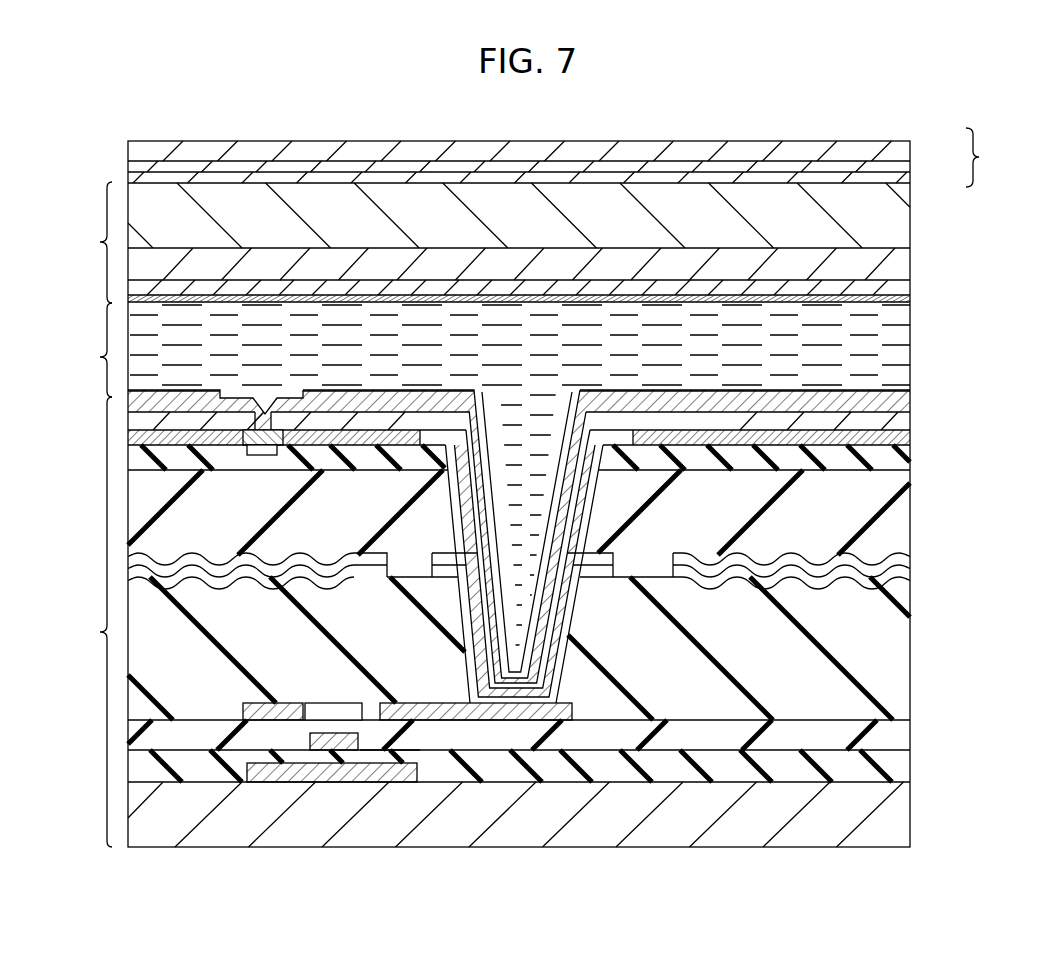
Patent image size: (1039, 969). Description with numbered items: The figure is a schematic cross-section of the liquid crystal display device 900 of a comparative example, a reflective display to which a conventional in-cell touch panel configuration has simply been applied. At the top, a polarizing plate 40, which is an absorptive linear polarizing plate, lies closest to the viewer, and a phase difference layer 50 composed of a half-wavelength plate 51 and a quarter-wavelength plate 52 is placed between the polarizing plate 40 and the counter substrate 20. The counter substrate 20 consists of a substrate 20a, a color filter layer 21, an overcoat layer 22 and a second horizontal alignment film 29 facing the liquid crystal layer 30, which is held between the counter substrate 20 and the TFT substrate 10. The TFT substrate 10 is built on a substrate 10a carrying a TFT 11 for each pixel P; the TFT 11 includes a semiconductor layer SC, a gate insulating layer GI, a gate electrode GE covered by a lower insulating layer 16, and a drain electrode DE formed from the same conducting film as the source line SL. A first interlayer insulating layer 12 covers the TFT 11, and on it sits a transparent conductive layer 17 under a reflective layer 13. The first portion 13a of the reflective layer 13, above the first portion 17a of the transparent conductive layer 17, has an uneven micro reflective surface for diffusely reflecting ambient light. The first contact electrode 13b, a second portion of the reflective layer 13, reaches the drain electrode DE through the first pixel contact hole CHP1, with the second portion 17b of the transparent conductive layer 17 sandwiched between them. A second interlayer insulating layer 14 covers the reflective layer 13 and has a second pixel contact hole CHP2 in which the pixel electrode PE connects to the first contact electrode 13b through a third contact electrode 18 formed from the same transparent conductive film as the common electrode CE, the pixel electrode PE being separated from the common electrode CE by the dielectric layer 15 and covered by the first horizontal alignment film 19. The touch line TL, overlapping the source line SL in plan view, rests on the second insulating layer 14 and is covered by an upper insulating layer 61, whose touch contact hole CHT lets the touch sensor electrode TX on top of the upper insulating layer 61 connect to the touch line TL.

The liquid crystal display device 900 is at (938, 110).
The polarizing plate 40 is at (128, 151).
The phase difference layer 50 is at (572, 157).
The half-wavelength plate 51 is at (912, 152).
The quarter-wavelength plate 52 is at (912, 169).
The counter substrate 20 is at (522, 252).
The substrate 20a is at (893, 214).
The color filter layer 21 is at (893, 265).
The overcoat layer 22 is at (893, 288).
The second horizontal alignment film 29 is at (893, 299).
The liquid crystal layer 30 is at (486, 349).
The TFT substrate 10 is at (522, 616).
The substrate 10a is at (893, 819).
The first horizontal alignment film 19 is at (893, 392).
The common electrode CE is at (519, 384).
The touch sensor electrode TX is at (519, 402).
The pixel electrode PE is at (388, 407).
The touch contact hole CHT is at (266, 432).
The first pixel contact hole CHP1 is at (515, 632).
The second pixel contact hole CHP2 is at (525, 474).
The dielectric layer 15 is at (893, 421).
The reflective layer 13 is at (519, 563).
The first portion of the reflective layer 13a is at (219, 572).
The first contact electrode 13b is at (451, 585).
The touch line TL is at (283, 452).
The upper insulating layer 61 is at (893, 459).
The second interlayer insulating layer 14 is at (893, 515).
The pixel P is at (187, 547).
The transparent conductive layer 17 is at (519, 734).
The first portion of the transparent conductive layer 17a is at (192, 582).
The second portion of the transparent conductive layer 17b is at (465, 582).
The third contact electrode 18 is at (573, 628).
The first interlayer insulating layer 12 is at (893, 651).
The lower insulating layer 16 is at (893, 737).
The gate insulating layer GI is at (368, 752).
The TFT 11 is at (345, 793).
The source line SL is at (248, 712).
The semiconductor layer SC is at (268, 773).
The gate electrode GE is at (328, 743).
The drain electrode DE is at (510, 712).